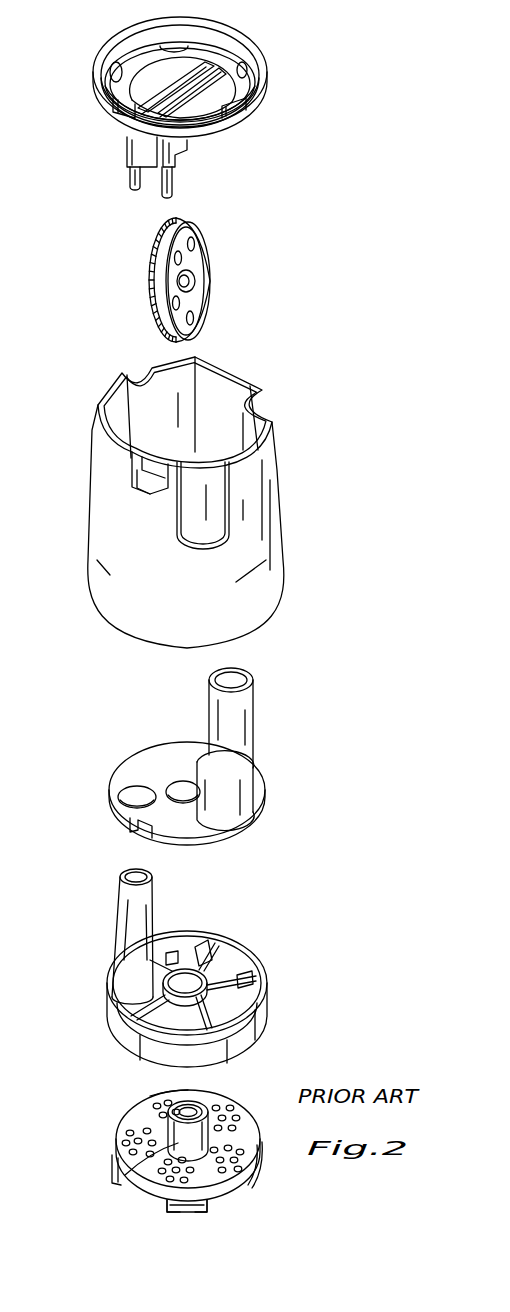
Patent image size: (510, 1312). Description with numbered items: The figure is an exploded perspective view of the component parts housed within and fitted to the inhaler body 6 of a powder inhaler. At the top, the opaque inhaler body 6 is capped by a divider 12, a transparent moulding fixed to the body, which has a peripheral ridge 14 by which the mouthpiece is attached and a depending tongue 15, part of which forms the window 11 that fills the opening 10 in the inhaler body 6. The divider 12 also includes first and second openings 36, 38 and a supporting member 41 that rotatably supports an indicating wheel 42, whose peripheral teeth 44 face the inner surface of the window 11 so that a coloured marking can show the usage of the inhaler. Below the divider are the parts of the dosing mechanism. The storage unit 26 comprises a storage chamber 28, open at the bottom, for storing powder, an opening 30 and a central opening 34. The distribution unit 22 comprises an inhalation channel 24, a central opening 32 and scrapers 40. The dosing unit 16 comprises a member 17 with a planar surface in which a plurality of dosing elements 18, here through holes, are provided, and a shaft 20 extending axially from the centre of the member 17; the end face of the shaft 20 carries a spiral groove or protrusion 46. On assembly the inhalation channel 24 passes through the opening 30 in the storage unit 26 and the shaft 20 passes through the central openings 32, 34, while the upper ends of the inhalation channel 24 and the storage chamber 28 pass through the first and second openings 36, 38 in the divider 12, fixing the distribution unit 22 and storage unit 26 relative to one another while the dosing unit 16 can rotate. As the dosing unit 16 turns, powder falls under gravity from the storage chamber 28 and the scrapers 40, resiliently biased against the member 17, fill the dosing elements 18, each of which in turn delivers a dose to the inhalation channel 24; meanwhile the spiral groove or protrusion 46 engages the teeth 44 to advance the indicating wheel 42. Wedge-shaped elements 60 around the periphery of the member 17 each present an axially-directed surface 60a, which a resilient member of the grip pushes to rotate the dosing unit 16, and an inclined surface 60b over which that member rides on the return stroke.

The inhaler body 6 is at (249, 507).
The opening 10 is at (140, 468).
The window 11 is at (135, 151).
The divider 12 is at (253, 40).
The peripheral ridge 14 is at (260, 96).
The depending tongue 15 is at (130, 182).
The dosing unit 16 is at (262, 1145).
The member 17 is at (143, 1117).
The dosing elements 18 is at (132, 1132).
The shaft 20 is at (125, 1160).
The distribution unit 22 is at (243, 940).
The inhalation channel 24 is at (132, 903).
The storage unit 26 is at (263, 790).
The storage chamber 28 is at (236, 726).
The opening 30 is at (128, 795).
The central opening 32 is at (178, 986).
The central opening 34 is at (175, 786).
The first opening 36 is at (110, 104).
The second opening 38 is at (240, 108).
The scrapers 40 is at (172, 955).
The supporting member 41 is at (207, 93).
The indicating wheel 42 is at (212, 252).
The teeth 44 is at (192, 218).
The spiral groove or protrusion 46 is at (200, 1106).
The wedge-shaped elements 60 is at (182, 1214).
The axially-directed surface 60a is at (166, 1206).
The inclined surface 60b is at (200, 1210).